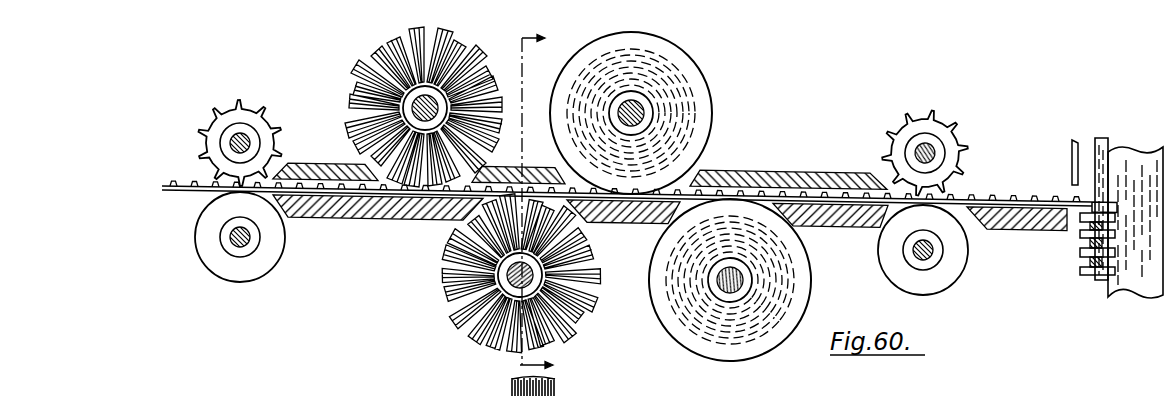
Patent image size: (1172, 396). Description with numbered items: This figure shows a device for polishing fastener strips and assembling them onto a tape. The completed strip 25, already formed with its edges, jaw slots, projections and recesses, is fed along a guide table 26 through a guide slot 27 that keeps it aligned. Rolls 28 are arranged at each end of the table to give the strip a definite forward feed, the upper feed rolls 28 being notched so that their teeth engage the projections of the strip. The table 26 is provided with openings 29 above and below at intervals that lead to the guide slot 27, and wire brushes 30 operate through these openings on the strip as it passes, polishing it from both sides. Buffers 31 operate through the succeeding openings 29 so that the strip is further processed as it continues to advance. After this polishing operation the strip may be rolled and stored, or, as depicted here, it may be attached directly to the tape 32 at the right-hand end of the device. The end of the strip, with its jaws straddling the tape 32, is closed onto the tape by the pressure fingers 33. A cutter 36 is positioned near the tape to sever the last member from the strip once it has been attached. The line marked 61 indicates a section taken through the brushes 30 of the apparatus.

The strip 25 is at (639, 204).
The guide table 26 is at (670, 230).
The guide slot 27 is at (325, 160).
The rolls 28 is at (262, 124).
The openings 29 is at (650, 194).
The wire brushes 30 is at (352, 88).
The buffers 31 is at (703, 118).
The tape 32 is at (1105, 150).
The pressure fingers 33 is at (1108, 205).
The cutter 36 is at (1071, 158).
The section line 61 is at (548, 205).